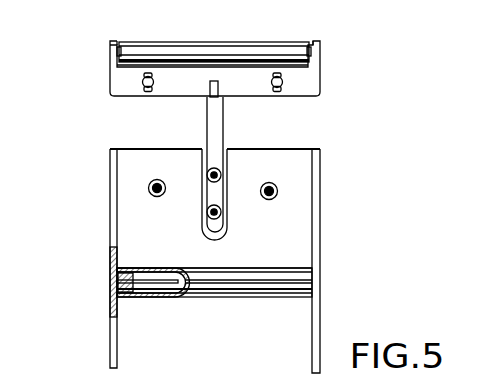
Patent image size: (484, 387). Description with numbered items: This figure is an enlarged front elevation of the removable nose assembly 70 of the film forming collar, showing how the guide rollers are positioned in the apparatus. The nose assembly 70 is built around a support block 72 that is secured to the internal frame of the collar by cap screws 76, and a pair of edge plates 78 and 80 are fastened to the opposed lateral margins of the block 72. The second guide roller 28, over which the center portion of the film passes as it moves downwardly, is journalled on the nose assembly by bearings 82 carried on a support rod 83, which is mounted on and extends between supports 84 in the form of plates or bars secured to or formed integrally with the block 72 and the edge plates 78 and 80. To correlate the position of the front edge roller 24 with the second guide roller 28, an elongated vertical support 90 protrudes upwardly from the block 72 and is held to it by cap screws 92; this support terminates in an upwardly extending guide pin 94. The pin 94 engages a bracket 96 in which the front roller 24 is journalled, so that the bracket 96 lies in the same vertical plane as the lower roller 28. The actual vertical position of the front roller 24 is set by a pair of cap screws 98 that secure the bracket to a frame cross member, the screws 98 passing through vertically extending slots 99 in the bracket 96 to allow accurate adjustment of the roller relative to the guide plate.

The front edge roller 24 is at (258, 53).
The second guide roller 28 is at (237, 282).
The nose assembly 70 is at (97, 232).
The support block 72 is at (300, 214).
The cap screws 76 is at (153, 182).
The edge plate 78 is at (115, 205).
The edge plate 80 is at (318, 252).
The bearings 82 is at (133, 293).
The support rod 83 is at (148, 280).
The supports 84 is at (112, 278).
The support 90 is at (219, 138).
The cap screws 92 is at (217, 179).
The guide pin 94 is at (210, 87).
The bracket 96 is at (311, 85).
The cap screws 98 is at (283, 80).
The slots 99 is at (282, 90).